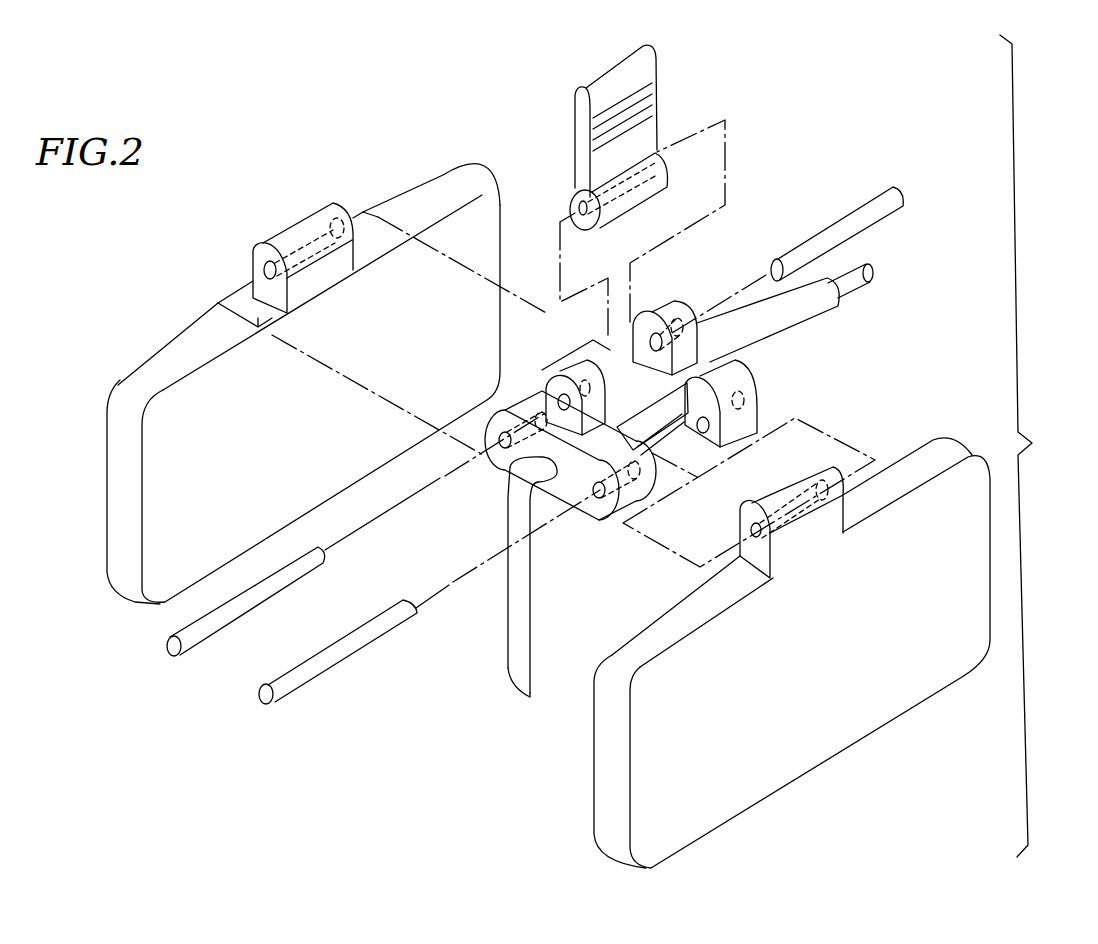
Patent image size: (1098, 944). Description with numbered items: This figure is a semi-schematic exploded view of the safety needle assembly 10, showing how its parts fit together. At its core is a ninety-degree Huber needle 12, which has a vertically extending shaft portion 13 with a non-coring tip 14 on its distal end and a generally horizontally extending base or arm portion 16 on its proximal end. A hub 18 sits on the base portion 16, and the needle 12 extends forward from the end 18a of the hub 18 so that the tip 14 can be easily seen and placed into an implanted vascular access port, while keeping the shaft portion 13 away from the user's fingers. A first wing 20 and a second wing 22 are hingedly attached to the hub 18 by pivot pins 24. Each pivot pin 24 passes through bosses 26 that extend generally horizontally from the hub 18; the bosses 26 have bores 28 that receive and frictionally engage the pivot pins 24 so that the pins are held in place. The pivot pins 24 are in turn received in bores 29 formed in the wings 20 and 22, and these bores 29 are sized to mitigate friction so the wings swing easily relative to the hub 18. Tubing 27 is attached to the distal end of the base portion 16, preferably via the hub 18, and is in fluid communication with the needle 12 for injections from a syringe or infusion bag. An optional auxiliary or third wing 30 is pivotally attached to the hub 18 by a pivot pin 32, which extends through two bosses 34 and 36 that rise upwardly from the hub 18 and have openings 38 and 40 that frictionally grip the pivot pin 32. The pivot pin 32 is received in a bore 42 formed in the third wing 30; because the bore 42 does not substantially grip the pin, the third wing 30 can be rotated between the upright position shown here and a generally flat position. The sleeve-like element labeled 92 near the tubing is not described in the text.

The safety needle assembly 10 is at (1034, 446).
The Huber needle 12 is at (513, 523).
The shaft portion 13 is at (508, 625).
The non-coring tip 14 is at (532, 698).
The base portion 16 is at (512, 462).
The hub 18 is at (546, 400).
The end of the hub 18a is at (560, 500).
The first wing 20 is at (182, 345).
The second wing 22 is at (821, 731).
The pivot pins 24 is at (190, 633).
The bosses 26 is at (610, 343).
The tubing 27 is at (853, 280).
The bores 28 is at (500, 441).
The bores 29 is at (760, 540).
The third wing 30 is at (657, 97).
The pivot pin 32 is at (860, 210).
The boss 34 is at (698, 343).
The boss 36 is at (585, 400).
The opening 38 is at (697, 346).
The opening 40 is at (542, 388).
The bore 42 is at (580, 206).
The sleeve 92 is at (808, 311).